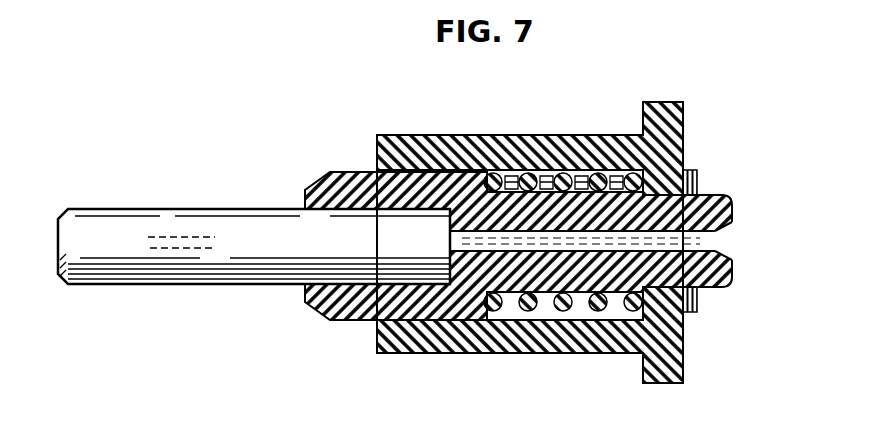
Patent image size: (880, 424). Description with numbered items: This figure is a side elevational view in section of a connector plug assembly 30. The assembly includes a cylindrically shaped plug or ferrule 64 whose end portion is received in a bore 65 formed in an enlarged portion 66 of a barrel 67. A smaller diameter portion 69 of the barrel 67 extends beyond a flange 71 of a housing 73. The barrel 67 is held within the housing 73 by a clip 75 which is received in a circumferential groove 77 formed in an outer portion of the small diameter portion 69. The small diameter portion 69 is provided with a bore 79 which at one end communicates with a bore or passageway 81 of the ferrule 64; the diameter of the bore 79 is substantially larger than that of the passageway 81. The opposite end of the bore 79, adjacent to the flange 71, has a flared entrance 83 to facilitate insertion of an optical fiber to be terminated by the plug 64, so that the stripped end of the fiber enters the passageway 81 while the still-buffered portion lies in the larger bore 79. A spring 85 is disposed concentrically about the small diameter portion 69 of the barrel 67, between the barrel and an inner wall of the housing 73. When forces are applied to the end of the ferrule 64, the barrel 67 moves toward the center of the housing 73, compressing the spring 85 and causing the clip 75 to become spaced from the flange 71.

The connector plug assembly 30 is at (373, 76).
The plug or ferrule 64 is at (102, 222).
The bore 65 is at (307, 213).
The enlarged portion 66 is at (350, 172).
The barrel 67 is at (435, 135).
The smaller diameter portion 69 is at (728, 288).
The flange 71 is at (660, 102).
The housing 73 is at (561, 135).
The clip 75 is at (697, 300).
The circumferential groove 77 is at (713, 195).
The bore 79 is at (703, 248).
The bore or passageway 81 is at (176, 243).
The flared entrance 83 is at (732, 225).
The spring 85 is at (557, 353).